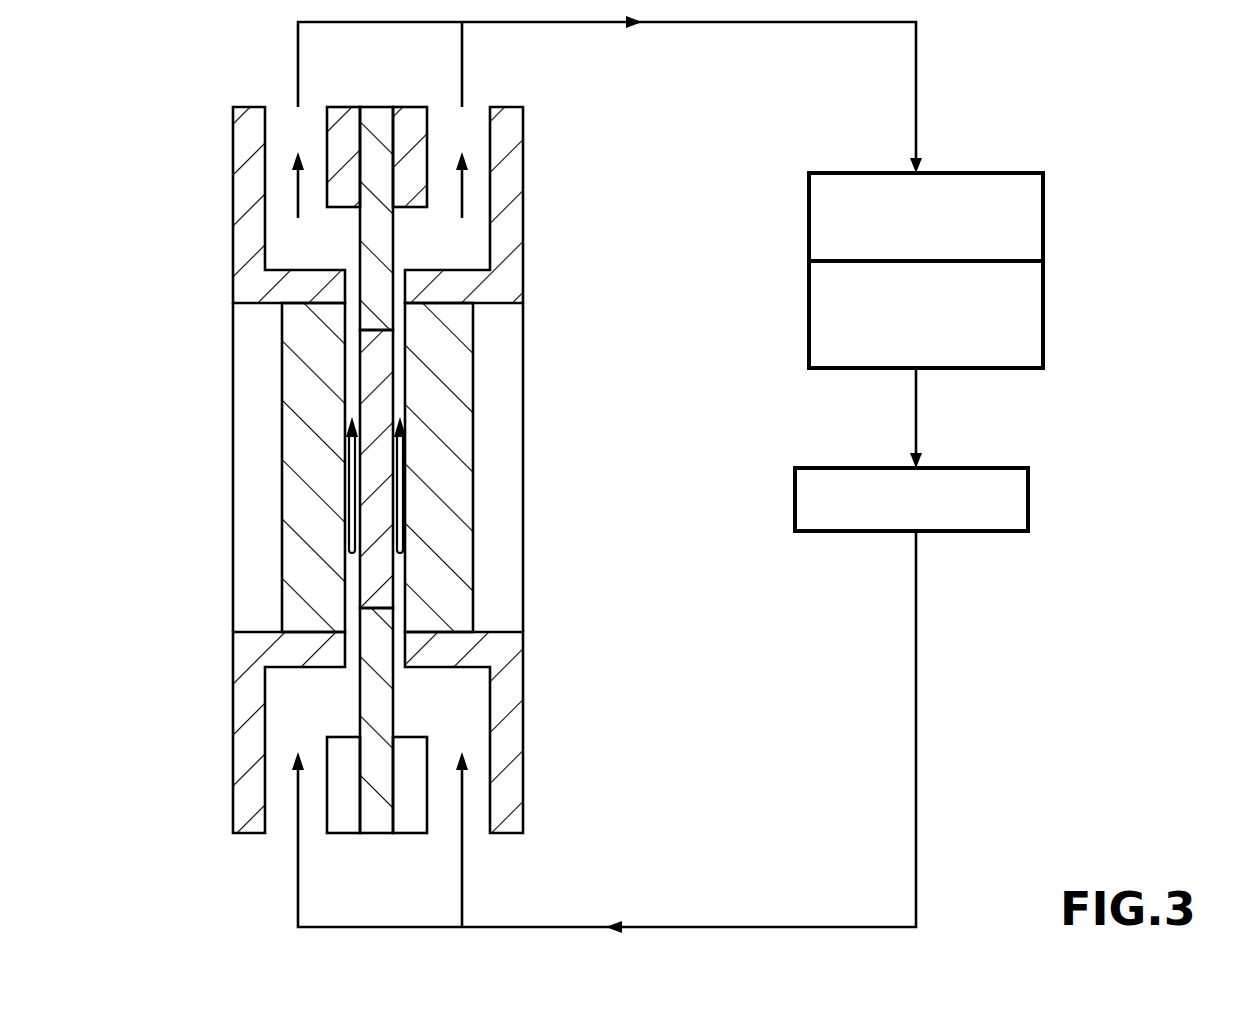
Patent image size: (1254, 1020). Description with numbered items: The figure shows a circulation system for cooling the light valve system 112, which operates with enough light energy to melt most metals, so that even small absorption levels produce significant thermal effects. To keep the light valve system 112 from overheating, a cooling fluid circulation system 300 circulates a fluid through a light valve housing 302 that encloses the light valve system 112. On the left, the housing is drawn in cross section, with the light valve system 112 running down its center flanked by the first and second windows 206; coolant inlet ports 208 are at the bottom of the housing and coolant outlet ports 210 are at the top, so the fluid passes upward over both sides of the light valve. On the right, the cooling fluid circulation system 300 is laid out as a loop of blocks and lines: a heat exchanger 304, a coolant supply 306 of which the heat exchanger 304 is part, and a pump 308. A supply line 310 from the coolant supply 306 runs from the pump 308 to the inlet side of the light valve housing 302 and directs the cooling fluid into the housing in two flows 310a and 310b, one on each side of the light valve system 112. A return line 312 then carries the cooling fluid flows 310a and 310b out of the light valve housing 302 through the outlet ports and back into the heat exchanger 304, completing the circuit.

The light valve system 112 is at (363, 107).
The first and second windows 206 is at (282, 365).
The coolant inlet ports 208 is at (285, 835).
The coolant outlet ports 210 is at (307, 122).
The cooling fluid circulation system 300 is at (728, 474).
The light valve housing 302 is at (233, 245).
The heat exchanger 304 is at (1045, 238).
The coolant supply 306 is at (1045, 325).
The pump 308 is at (1030, 500).
The supply line 310 is at (725, 927).
The cooling fluid flow 310a is at (400, 476).
The cooling fluid flow 310b is at (347, 463).
The return line 312 is at (783, 23).